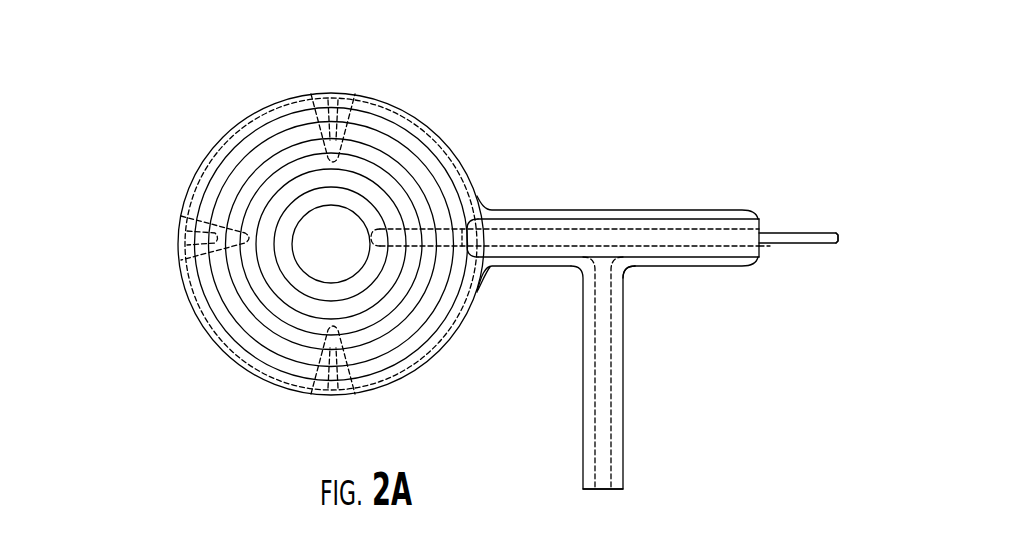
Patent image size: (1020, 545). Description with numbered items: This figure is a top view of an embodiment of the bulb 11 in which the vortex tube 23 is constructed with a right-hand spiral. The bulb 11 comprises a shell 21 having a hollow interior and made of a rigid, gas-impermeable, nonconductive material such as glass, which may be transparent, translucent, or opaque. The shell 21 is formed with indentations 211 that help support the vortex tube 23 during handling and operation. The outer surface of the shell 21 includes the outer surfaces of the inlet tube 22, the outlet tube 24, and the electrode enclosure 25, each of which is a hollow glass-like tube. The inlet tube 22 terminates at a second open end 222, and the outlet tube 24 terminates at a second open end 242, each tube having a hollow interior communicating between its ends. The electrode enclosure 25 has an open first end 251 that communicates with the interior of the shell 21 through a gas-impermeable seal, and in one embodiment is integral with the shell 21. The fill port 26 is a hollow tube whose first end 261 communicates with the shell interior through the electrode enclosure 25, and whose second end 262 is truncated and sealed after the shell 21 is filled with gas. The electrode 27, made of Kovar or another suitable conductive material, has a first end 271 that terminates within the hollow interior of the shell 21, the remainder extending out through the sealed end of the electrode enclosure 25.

The bulb 11 is at (459, 268).
The shell 21 is at (457, 152).
The indentations 211 is at (334, 106).
The inlet tube 22 is at (710, 228).
The second open end 222 is at (770, 248).
The vortex tube 23 is at (258, 135).
The outlet tube 24 is at (650, 218).
The second open end 242 is at (761, 217).
The electrode enclosure 25 is at (565, 208).
The first end 251 is at (485, 288).
The fill port 26 is at (623, 382).
The first end 261 is at (628, 272).
The second end 262 is at (610, 490).
The electrode 27 is at (787, 240).
The first end 271 is at (840, 233).